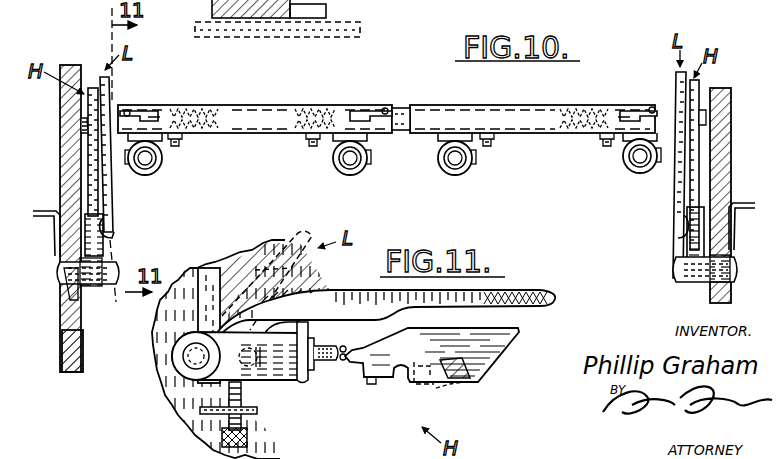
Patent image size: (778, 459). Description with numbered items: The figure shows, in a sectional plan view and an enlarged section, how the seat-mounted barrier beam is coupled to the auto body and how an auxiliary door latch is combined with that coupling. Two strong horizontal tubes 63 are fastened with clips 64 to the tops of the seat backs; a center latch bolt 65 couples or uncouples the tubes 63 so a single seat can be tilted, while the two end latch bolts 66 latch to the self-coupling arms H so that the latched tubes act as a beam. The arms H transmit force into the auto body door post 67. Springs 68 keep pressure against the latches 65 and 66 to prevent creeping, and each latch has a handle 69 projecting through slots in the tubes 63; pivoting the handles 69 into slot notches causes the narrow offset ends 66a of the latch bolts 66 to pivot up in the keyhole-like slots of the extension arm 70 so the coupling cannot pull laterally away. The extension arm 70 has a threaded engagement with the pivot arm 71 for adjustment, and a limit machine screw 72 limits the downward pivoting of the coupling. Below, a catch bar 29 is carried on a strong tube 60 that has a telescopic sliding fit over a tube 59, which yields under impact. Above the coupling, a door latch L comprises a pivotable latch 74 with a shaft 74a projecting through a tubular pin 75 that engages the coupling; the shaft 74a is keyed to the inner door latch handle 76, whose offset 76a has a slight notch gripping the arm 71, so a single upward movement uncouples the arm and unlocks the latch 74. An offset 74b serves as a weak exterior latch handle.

In FIG. 10, the catch bar 29 is at (438, 150).
In FIG. 10, the strong tube 59 is at (643, 172).
In FIG. 10, the strong tube 60 is at (625, 168).
In FIG. 10, the horizontal tubes 63 is at (258, 134).
In FIG. 10, the clips 64 is at (184, 141).
In FIG. 10, the center latch bolt 65 is at (400, 134).
In FIG. 10, the end latch bolts 66 is at (150, 111).
In FIG. 11, the end latch bolts 66 is at (460, 381).
In FIG. 11, the narrow offset ends 66a is at (424, 388).
In FIG. 11, the auto body door post 67 is at (210, 270).
In FIG. 10, the springs 68 is at (201, 111).
In FIG. 10, the handle 69 is at (130, 109).
In FIG. 11, the extension arm 70 is at (378, 384).
In FIG. 11, the pivot arm 71 is at (280, 372).
In FIG. 11, the limit machine screw 72 is at (250, 438).
In FIG. 11, the pivotable latch 74 is at (300, 268).
In FIG. 10, the shaft 74a is at (106, 284).
In FIG. 11, the offset 74b is at (300, 236).
In FIG. 10, the tubular pin 75 is at (70, 288).
In FIG. 11, the inner door latch handle 76 is at (556, 298).
In FIG. 11, the offset 76a is at (299, 378).